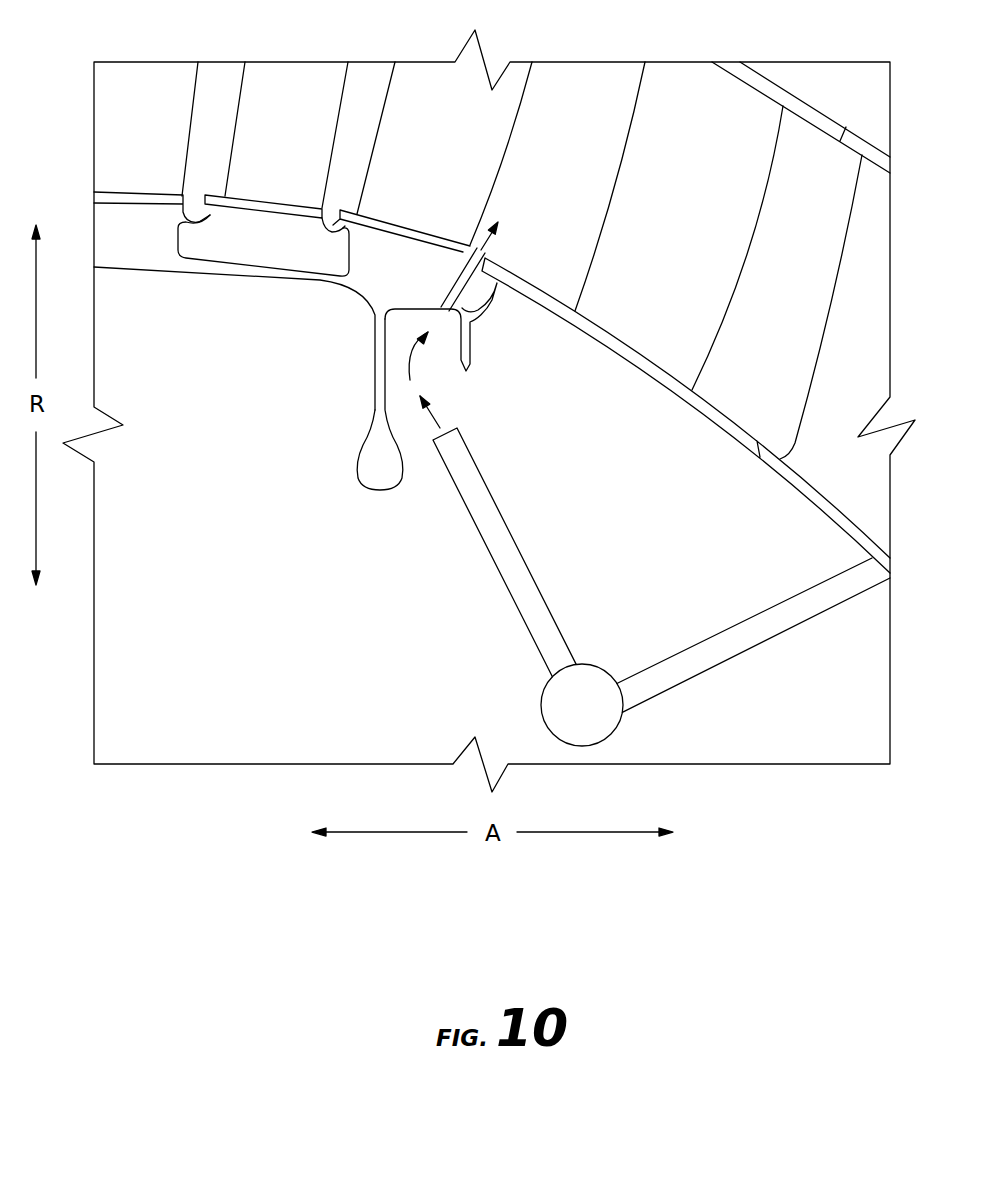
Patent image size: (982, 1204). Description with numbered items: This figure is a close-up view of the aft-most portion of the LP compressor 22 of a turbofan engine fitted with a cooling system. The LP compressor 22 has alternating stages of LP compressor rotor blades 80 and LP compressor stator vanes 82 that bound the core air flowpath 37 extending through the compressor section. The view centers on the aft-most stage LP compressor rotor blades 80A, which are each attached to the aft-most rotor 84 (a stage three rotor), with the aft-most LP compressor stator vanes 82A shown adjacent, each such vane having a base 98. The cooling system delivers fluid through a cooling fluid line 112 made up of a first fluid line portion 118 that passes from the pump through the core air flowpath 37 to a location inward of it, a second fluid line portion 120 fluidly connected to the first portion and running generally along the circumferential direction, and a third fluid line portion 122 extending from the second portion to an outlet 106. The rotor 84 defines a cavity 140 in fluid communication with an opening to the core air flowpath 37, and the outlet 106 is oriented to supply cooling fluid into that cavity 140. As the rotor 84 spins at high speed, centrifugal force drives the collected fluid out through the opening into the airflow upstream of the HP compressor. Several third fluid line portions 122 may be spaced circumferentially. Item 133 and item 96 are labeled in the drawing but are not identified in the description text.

The LP compressor 22 is at (838, 88).
The LP compressor rotor blades 80 is at (132, 175).
The LP compressor stator vanes 82 is at (260, 183).
The aft-most rotor 84 is at (363, 447).
The cavity 140 is at (437, 335).
The seal strip 133 is at (448, 281).
The outlet 106 is at (448, 428).
The aft-most stage LP compressor rotor blades 80A is at (482, 130).
The core air flowpath 37 is at (800, 277).
The base 98 is at (700, 411).
The shroud 96 is at (848, 315).
The aft-most LP compressor stator vanes 82A is at (637, 318).
The third fluid line portion 122 is at (480, 540).
The second fluid line portion 120 is at (541, 713).
The first fluid line portion 118 is at (708, 670).
The cooling fluid line 112 is at (862, 642).